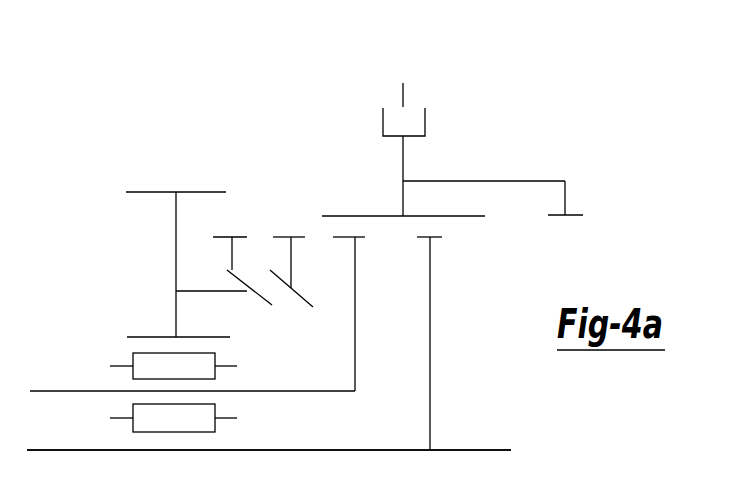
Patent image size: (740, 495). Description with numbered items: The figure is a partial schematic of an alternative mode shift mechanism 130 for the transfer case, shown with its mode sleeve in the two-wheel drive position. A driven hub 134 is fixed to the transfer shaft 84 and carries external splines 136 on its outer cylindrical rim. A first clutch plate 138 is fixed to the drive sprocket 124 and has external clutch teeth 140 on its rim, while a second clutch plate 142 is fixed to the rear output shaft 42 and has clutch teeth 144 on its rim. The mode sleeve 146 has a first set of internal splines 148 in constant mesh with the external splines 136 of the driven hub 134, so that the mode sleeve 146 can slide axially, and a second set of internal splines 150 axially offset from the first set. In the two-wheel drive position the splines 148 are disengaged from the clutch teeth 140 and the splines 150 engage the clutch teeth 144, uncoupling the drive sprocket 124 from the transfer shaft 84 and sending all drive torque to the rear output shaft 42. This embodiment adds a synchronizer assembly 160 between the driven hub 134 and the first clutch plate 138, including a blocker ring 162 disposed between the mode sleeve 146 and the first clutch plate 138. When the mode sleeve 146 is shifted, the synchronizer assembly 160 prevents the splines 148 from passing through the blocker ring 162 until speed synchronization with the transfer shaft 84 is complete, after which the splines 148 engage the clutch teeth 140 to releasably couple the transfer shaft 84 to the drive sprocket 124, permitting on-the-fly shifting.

The mode shift mechanism 130 is at (243, 127).
The drive sprocket 124 is at (176, 247).
The clutch teeth 140 is at (222, 237).
The first clutch plate 138 is at (207, 291).
The blocker ring 162 is at (291, 263).
The synchronizer assembly 160 is at (282, 302).
The external splines 136 is at (338, 237).
The driven hub 134 is at (355, 327).
The transfer shaft 84 is at (65, 391).
The clutch teeth 144 is at (442, 239).
The second clutch plate 142 is at (430, 323).
The rear output shaft 42 is at (467, 450).
The first set of internal splines 148 is at (384, 216).
The mode sleeve 146 is at (525, 181).
The second set of internal splines 150 is at (570, 215).